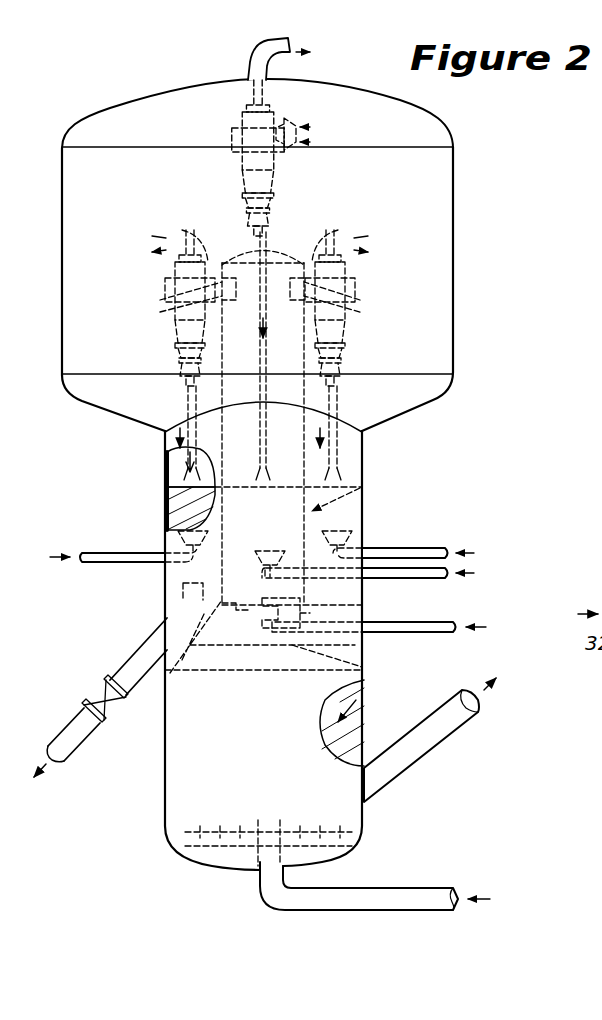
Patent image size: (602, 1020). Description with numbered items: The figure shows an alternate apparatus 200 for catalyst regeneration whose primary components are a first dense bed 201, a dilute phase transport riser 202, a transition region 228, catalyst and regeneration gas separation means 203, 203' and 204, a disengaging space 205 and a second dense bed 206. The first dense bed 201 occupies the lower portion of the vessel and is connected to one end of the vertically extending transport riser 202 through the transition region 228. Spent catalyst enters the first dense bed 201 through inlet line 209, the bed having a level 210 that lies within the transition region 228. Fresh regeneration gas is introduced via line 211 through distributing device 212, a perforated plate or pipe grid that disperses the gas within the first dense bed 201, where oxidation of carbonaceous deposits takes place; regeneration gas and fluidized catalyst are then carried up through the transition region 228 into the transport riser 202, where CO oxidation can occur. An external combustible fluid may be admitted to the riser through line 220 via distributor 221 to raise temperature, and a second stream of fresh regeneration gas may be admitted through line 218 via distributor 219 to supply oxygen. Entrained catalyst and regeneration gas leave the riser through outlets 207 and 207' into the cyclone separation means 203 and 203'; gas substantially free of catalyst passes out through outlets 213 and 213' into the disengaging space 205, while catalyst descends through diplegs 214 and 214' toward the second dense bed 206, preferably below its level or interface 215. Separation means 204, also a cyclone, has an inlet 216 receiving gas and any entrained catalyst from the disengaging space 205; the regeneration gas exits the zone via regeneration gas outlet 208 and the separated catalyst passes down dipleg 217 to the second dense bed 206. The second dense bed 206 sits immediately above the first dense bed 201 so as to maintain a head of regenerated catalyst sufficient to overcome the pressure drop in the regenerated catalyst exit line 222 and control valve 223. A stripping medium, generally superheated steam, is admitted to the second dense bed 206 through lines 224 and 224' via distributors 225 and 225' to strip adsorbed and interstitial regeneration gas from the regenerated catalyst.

The alternate apparatus 200 is at (460, 207).
The first dense bed 201 is at (366, 706).
The dilute phase transport riser 202 is at (362, 490).
The catalyst and regeneration gas separation means 203 is at (154, 308).
The catalyst and regeneration gas separation means 203' is at (367, 308).
The separation means 204 is at (236, 130).
The disengaging space 205 is at (92, 193).
The second dense bed 206 is at (188, 505).
The outlet of transport riser 207 is at (170, 301).
The outlet of transport riser 207' is at (353, 301).
The regeneration gas outlet 208 is at (262, 50).
The inlet line 209 is at (425, 756).
The level 210 is at (360, 663).
The line 211 is at (352, 888).
The distributing device 212 is at (212, 850).
The outlet 213 is at (156, 227).
The outlet 213' is at (362, 227).
The dipleg 214 is at (157, 425).
The dipleg 214' is at (369, 425).
The level or interface 215 is at (198, 488).
The inlet 216 is at (295, 150).
The dipleg 217 is at (272, 444).
The line 218 is at (425, 633).
The distributor 219 is at (303, 598).
The line 220 is at (420, 580).
The distributor 221 is at (283, 548).
The regenerated catalyst exit line 222 is at (140, 656).
The control valve 223 is at (96, 706).
The line 224 is at (119, 576).
The line 224' is at (414, 538).
The distributor 225 is at (155, 533).
The distributor 225' is at (370, 530).
The transition region 228 is at (242, 630).